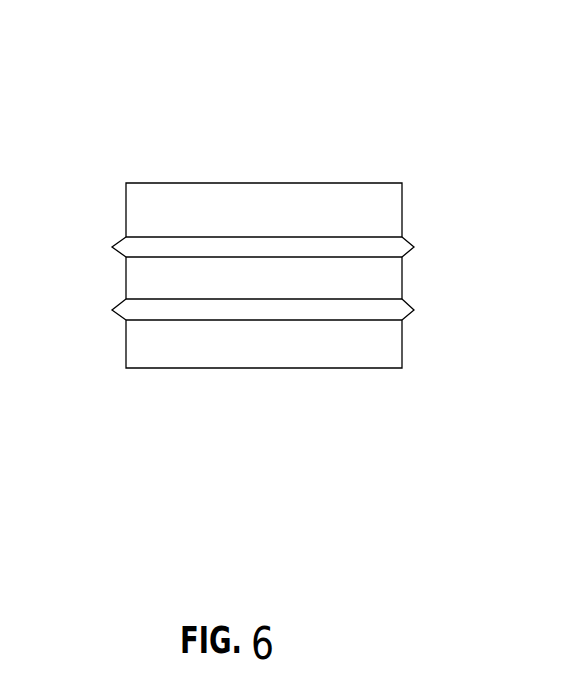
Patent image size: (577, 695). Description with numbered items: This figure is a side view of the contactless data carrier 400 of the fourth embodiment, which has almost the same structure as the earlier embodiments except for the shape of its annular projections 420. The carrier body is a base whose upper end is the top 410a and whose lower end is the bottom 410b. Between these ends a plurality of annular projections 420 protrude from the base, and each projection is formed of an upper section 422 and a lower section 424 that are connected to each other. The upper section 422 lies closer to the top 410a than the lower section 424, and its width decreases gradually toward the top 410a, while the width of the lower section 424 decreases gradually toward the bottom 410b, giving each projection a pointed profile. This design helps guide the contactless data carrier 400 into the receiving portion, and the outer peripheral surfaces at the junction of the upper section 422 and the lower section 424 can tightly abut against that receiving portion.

The contactless data carrier 400 is at (140, 153).
The top of the base 410a is at (308, 183).
The bottom of the base 410b is at (290, 368).
The annular projections 420 is at (510, 210).
The upper section 422 is at (407, 237).
The lower section 424 is at (407, 257).